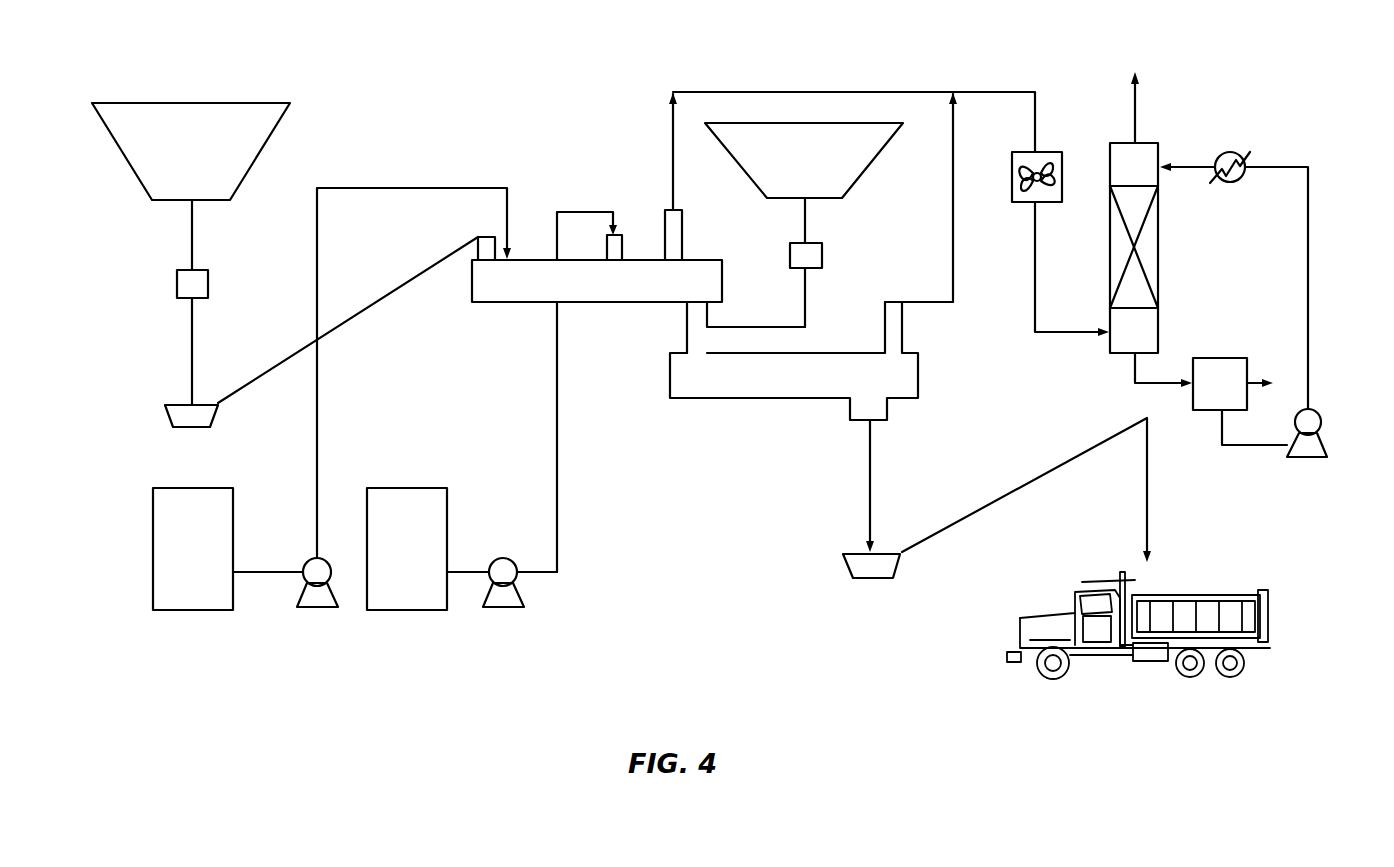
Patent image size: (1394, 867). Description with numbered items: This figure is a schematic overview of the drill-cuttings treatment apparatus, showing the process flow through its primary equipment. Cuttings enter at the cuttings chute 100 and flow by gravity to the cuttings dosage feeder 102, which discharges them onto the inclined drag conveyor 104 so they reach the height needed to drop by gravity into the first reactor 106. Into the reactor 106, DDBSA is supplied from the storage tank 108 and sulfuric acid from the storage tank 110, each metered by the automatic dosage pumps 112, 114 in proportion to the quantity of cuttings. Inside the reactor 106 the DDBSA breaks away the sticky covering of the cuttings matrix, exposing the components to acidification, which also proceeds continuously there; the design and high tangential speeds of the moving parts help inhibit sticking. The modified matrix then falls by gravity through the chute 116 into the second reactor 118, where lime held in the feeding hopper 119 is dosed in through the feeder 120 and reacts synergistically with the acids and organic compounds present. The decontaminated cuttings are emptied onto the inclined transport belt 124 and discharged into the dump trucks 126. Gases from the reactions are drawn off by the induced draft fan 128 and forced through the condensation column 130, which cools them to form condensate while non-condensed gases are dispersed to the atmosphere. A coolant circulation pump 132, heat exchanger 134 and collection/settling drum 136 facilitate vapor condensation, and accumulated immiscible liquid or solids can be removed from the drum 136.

The cuttings chute 100 is at (212, 163).
The cuttings dosage feeder 102 is at (151, 275).
The inclined drag conveyor 104 is at (348, 320).
The first reactor 106 is at (615, 294).
The storage tank 108 is at (213, 561).
The storage tank 110 is at (426, 561).
The automatic dosage pump 112 is at (296, 607).
The automatic dosage pump 114 is at (525, 607).
The chute 116 is at (746, 323).
The second reactor 118 is at (806, 389).
The feeding hopper 119 is at (818, 174).
The feeder 120 is at (847, 247).
The inclined transport belt 124 is at (1026, 490).
The dump truck 126 is at (1176, 625).
The induced draft fan 128 is at (1013, 200).
The condensation column 130 is at (1153, 343).
The coolant circulation pump 132 is at (1330, 417).
The heat exchanger 134 is at (1240, 263).
The collection/settling drum 136 is at (1244, 362).